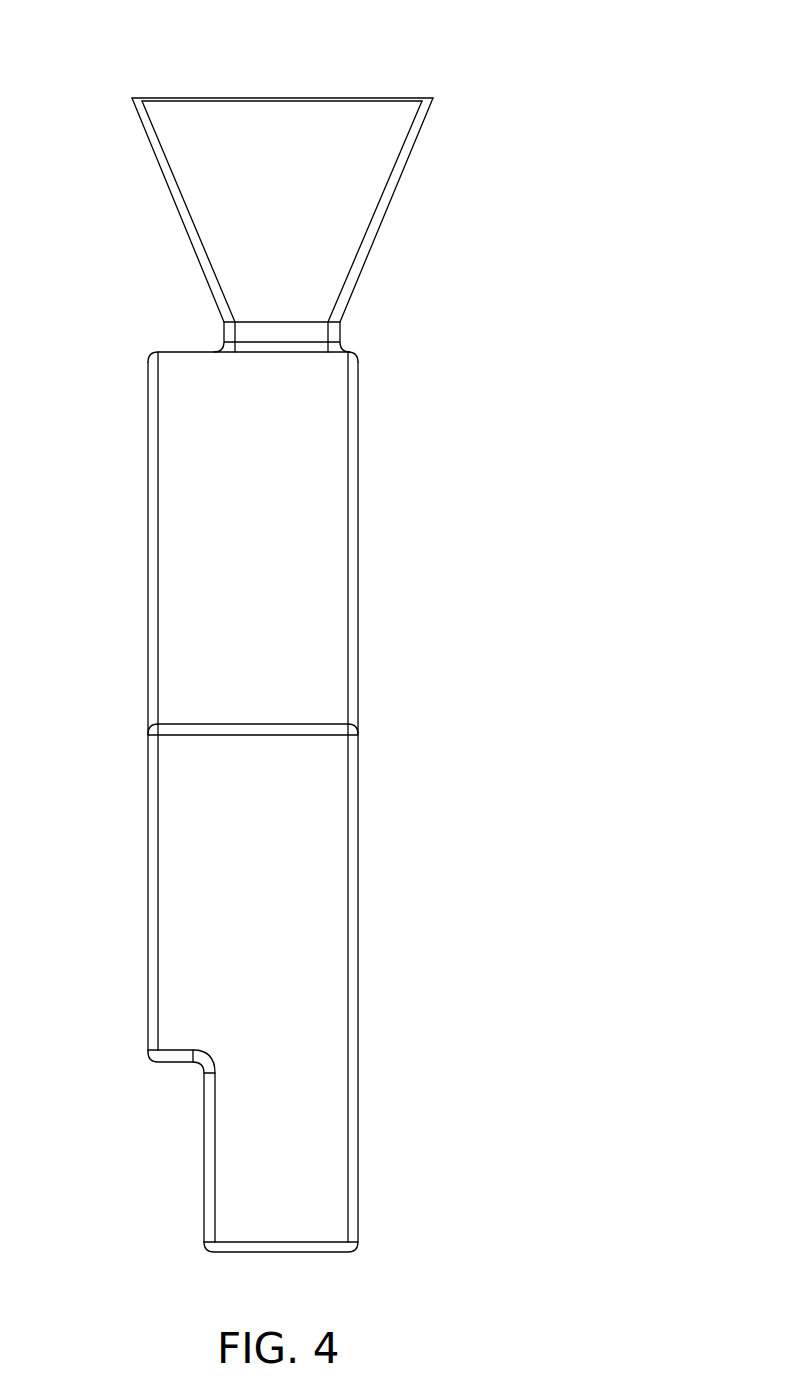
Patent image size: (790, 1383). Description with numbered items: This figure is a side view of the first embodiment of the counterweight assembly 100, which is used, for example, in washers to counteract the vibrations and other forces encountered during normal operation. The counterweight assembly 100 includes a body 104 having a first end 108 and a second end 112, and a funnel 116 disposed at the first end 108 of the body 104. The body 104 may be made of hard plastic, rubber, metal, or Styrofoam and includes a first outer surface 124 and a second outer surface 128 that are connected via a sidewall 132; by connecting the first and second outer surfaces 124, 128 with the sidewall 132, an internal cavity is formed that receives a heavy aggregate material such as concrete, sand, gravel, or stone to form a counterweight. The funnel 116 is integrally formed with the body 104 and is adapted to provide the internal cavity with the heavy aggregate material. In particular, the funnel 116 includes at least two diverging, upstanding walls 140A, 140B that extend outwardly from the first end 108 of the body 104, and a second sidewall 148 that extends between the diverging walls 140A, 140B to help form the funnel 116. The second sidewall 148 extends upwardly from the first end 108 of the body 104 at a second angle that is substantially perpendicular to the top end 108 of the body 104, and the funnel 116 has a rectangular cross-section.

The counterweight assembly 100 is at (510, 40).
The body 104 is at (291, 802).
The first end 108 is at (173, 351).
The second end 112 is at (280, 1253).
The funnel 116 is at (279, 176).
The first outer surface 124 is at (148, 480).
The second outer surface 128 is at (358, 500).
The sidewall 132 is at (278, 558).
The diverging upstanding wall 140A is at (387, 213).
The diverging upstanding wall 140B is at (175, 213).
The second sidewall 148 is at (302, 225).